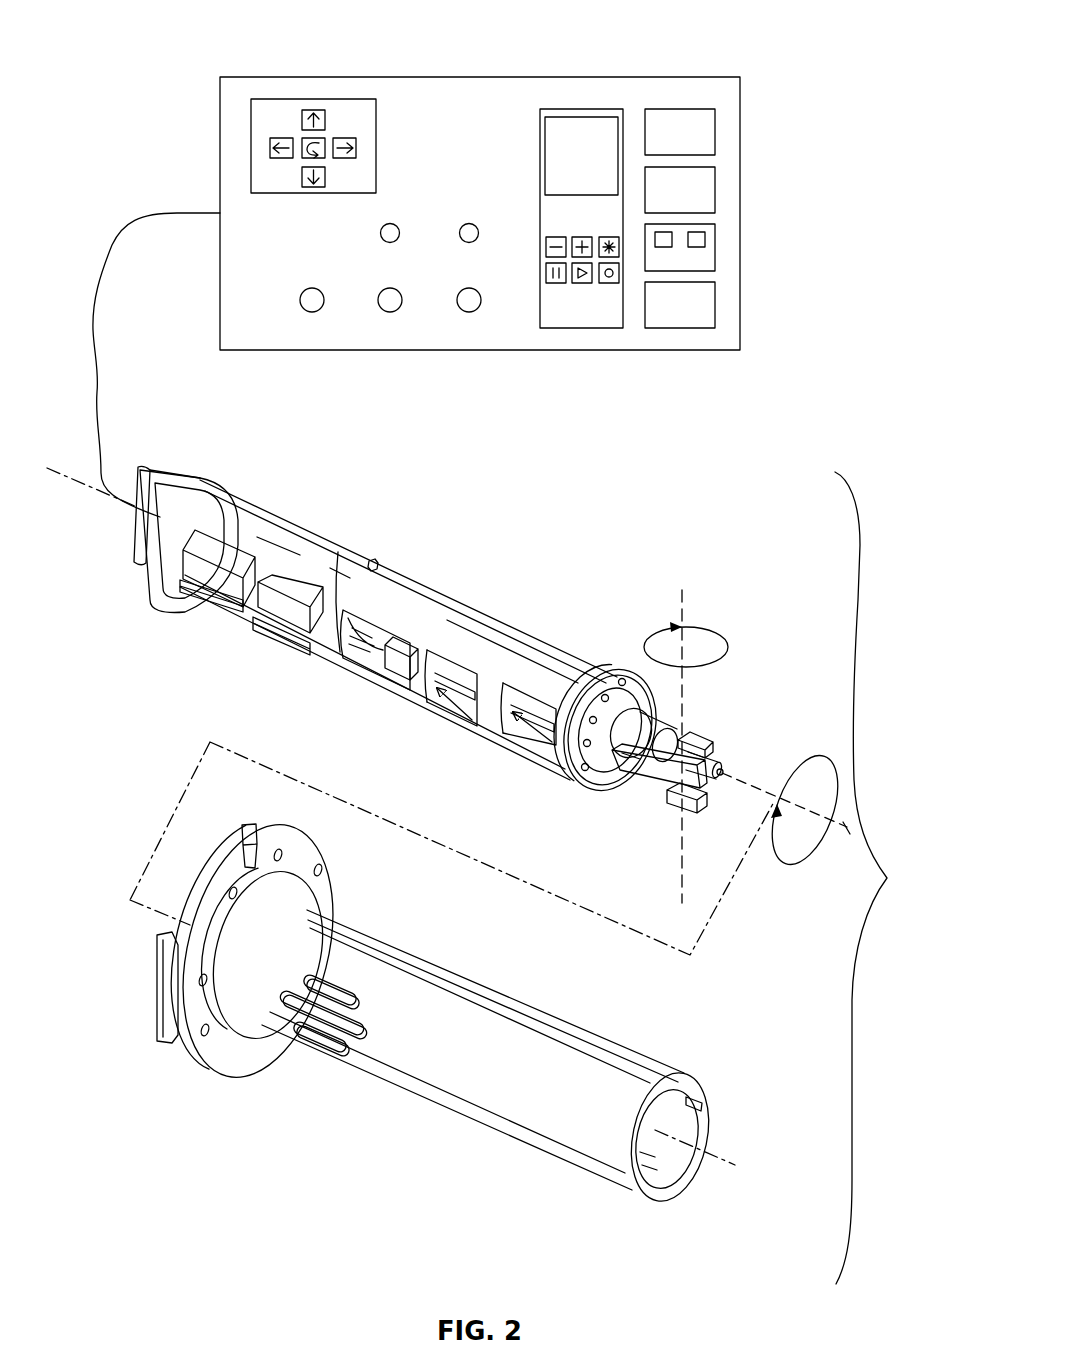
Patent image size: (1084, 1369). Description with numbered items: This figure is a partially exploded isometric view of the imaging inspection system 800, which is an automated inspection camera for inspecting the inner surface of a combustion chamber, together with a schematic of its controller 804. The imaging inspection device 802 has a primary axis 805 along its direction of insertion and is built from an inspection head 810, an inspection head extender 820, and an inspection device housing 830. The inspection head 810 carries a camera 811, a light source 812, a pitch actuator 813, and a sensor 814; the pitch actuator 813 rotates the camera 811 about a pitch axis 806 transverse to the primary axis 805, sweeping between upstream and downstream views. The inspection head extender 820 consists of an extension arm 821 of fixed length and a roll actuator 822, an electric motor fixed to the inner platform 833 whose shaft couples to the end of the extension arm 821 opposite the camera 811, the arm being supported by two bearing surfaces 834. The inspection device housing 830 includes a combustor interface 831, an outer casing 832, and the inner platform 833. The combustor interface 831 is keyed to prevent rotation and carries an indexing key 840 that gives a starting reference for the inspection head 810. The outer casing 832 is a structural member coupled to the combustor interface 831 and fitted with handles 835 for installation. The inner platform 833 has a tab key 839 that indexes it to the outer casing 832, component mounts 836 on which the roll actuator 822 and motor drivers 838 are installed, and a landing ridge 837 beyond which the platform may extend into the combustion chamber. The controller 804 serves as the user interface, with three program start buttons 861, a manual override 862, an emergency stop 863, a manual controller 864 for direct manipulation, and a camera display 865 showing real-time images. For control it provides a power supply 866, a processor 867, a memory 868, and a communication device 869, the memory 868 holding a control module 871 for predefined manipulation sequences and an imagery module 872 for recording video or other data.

The imaging inspection system 800 is at (180, 28).
The imaging inspection device 802 is at (810, 428).
The controller 804 is at (716, 58).
The primary axis 805 is at (845, 833).
The pitch axis 806 is at (683, 617).
The inspection head 810 is at (722, 695).
The camera 811 is at (716, 778).
The light source 812 is at (716, 762).
The pitch actuator 813 is at (673, 803).
The sensor 814 is at (697, 740).
The inspection head extender 820 is at (616, 784).
The extension arm 821 is at (625, 720).
The roll actuator 822 is at (398, 653).
The inspection device housing 830 is at (884, 878).
The combustor interface 831 is at (222, 1067).
The outer casing 832 is at (485, 961).
The inner platform 833 is at (522, 560).
The bearing surfaces 834 is at (517, 745).
The handles 835 is at (158, 473).
The component mounts 836 is at (273, 630).
The landing ridge 837 is at (573, 777).
The motor drivers 838 is at (297, 610).
The tab key 839 is at (373, 560).
The indexing key 840 is at (282, 855).
The program start buttons 861 is at (467, 288).
The manual override 862 is at (390, 224).
The emergency stop 863 is at (469, 224).
The manual controller 864 is at (364, 120).
The camera display 865 is at (556, 130).
The power supply 866 is at (708, 135).
The processor 867 is at (708, 192).
The memory 868 is at (708, 255).
The communication device 869 is at (708, 307).
The control module 871 is at (705, 237).
The imagery module 872 is at (661, 247).